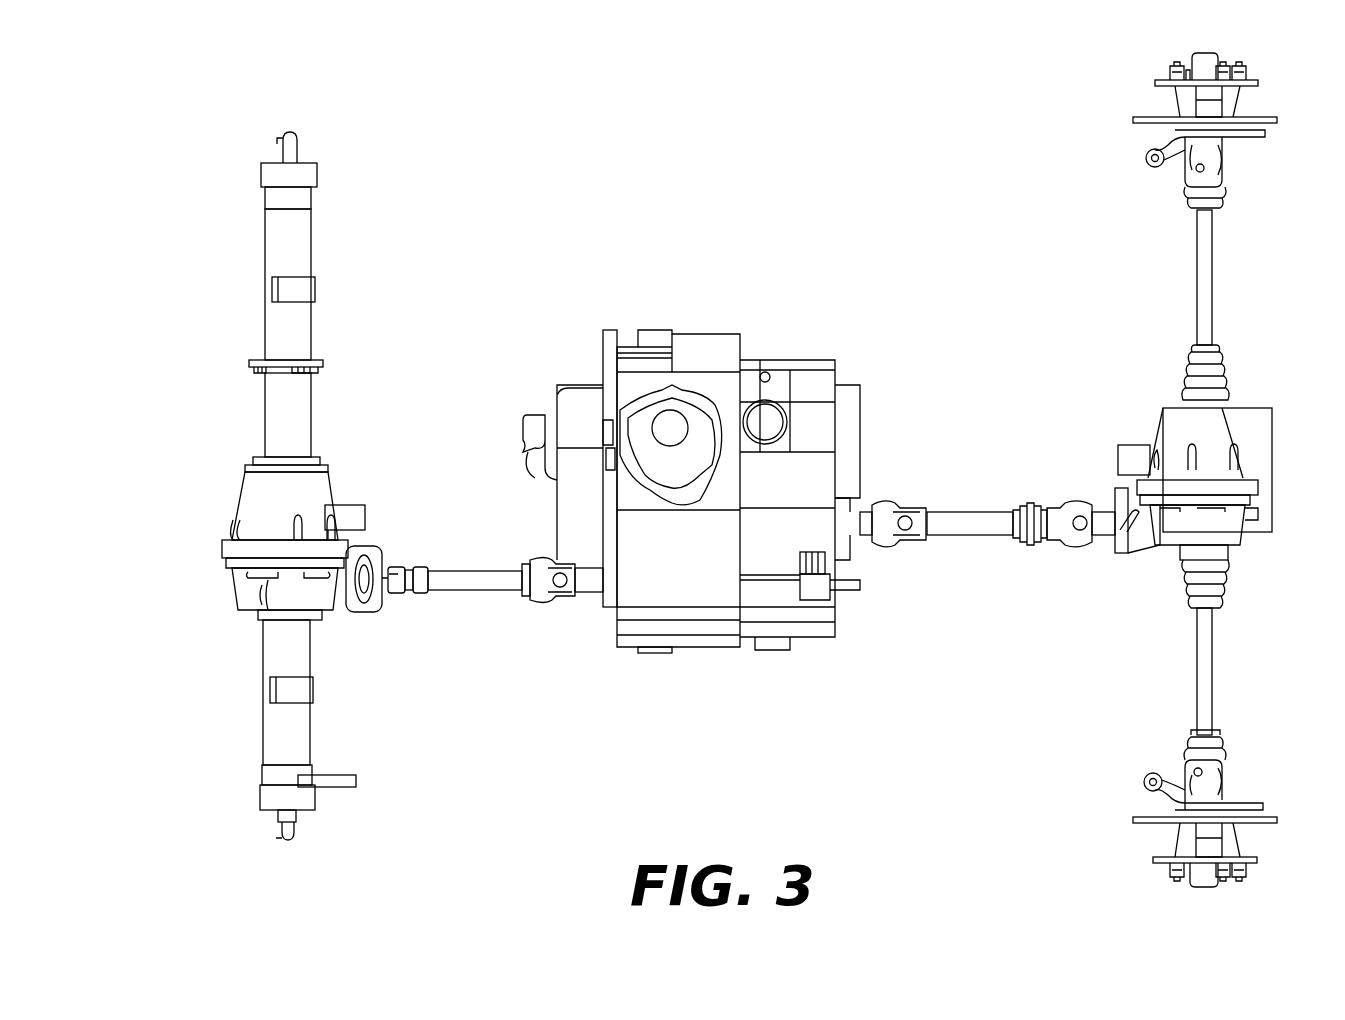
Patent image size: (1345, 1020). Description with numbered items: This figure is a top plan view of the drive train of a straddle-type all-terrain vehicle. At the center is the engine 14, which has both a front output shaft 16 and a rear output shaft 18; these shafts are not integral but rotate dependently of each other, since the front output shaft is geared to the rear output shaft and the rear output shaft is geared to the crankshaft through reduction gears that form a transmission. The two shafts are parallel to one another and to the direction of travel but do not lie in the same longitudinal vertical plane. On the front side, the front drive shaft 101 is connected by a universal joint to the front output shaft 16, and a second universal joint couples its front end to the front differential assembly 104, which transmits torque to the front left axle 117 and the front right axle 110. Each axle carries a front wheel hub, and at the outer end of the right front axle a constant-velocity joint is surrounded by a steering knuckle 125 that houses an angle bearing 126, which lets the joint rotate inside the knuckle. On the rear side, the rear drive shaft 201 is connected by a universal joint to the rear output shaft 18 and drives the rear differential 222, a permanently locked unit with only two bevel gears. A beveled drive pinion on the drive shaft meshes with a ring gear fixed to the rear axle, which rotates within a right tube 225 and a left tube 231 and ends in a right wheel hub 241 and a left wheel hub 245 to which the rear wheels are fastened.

The engine 14 is at (768, 292).
The front output shaft 16 is at (865, 552).
The rear output shaft 18 is at (578, 596).
The front drive shaft 101 is at (960, 552).
The front differential assembly 104 is at (1272, 392).
The front right axle 110 is at (1218, 686).
The front left axle 117 is at (1218, 283).
The steering knuckle 125 is at (1140, 792).
The angle bearing 126 is at (1145, 165).
The rear drive shaft 201 is at (497, 594).
The rear differential 222 is at (230, 518).
The right tube 225 is at (255, 715).
The left tube 231 is at (258, 284).
The right wheel hub 241 is at (266, 840).
The left wheel hub 245 is at (272, 150).